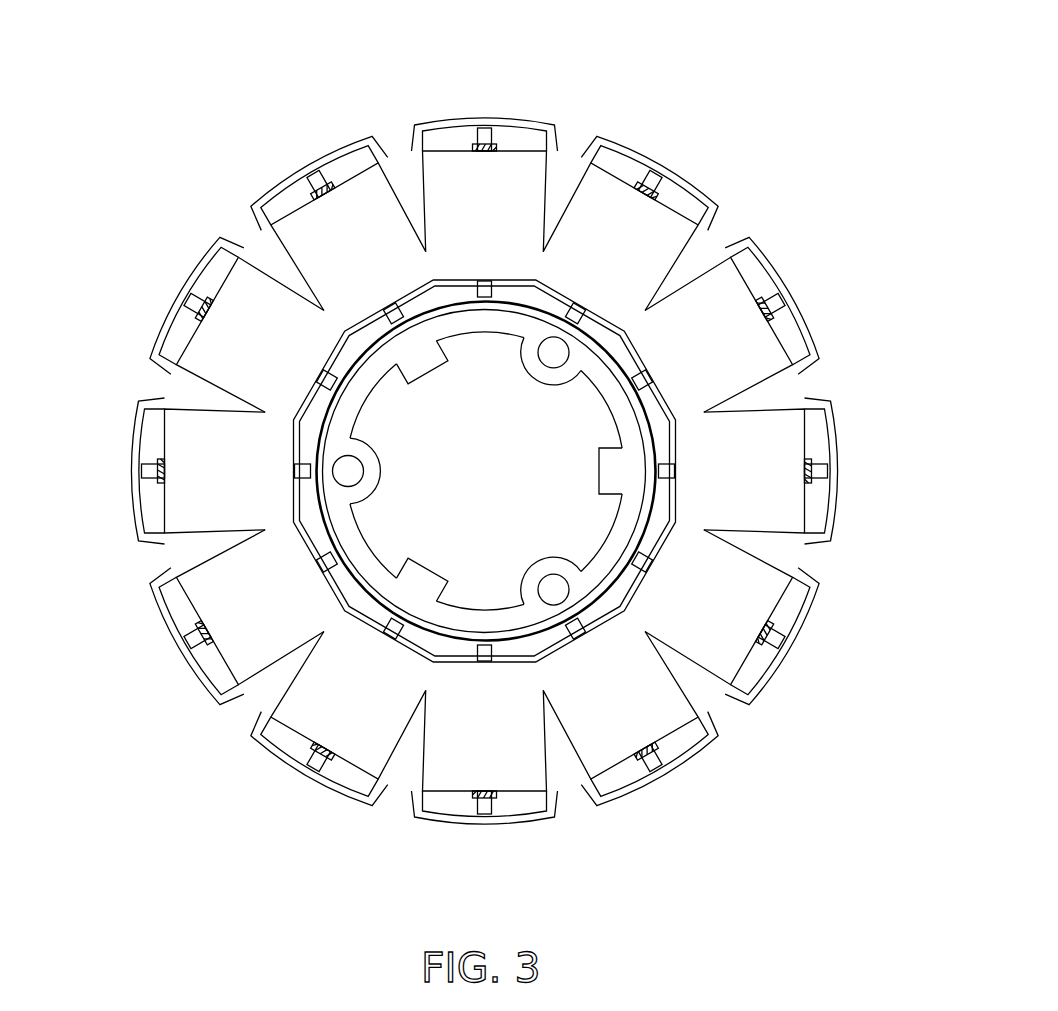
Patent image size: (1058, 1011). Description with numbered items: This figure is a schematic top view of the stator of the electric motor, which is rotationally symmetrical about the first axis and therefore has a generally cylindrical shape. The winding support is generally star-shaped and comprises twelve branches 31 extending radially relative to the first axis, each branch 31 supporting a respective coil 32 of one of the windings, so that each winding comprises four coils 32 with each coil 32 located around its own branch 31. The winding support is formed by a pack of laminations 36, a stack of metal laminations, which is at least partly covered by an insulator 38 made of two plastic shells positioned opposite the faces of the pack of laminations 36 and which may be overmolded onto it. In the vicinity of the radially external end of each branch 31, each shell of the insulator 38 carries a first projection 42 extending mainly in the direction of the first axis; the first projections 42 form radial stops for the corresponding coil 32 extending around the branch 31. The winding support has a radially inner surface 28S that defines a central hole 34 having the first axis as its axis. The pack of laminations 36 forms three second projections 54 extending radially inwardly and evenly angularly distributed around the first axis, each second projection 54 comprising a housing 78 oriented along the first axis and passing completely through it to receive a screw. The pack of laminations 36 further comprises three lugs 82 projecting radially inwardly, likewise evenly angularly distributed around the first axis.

The radially inner surface 28S is at (383, 537).
The branch 31 is at (178, 332).
The coil 32 is at (727, 640).
The central hole 34 is at (487, 469).
The pack of laminations 36 is at (612, 548).
The insulator 38 is at (785, 613).
The first projection 42 is at (473, 135).
The second projection 54 is at (527, 353).
The housing 78 is at (565, 338).
The lug 82 is at (417, 360).